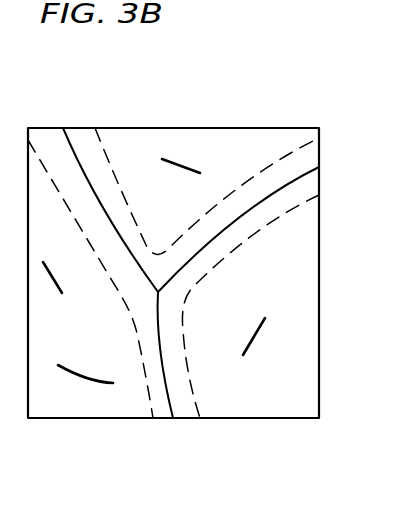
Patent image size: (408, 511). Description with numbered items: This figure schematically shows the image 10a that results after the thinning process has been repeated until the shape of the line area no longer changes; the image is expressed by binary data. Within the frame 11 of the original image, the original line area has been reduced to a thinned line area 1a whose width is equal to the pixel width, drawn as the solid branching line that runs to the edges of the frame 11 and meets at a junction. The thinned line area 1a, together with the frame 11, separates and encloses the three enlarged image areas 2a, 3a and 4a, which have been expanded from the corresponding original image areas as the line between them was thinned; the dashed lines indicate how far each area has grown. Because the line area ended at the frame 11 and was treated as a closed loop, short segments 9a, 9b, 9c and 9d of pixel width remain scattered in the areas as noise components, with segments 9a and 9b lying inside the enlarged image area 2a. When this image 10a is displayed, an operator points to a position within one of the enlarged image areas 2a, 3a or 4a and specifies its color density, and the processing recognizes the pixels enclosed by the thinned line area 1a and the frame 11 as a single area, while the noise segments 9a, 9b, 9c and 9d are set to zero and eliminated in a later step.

The frame 11 is at (319, 253).
The thinned line area 1a is at (173, 409).
The image 10a is at (98, 125).
The enlarged image area 4a is at (194, 132).
The enlarged image area 2a is at (58, 418).
The enlarged image area 3a is at (281, 413).
The segment 9a is at (55, 283).
The segment 9b is at (65, 365).
The segment 9c is at (252, 335).
The segment 9d is at (182, 163).